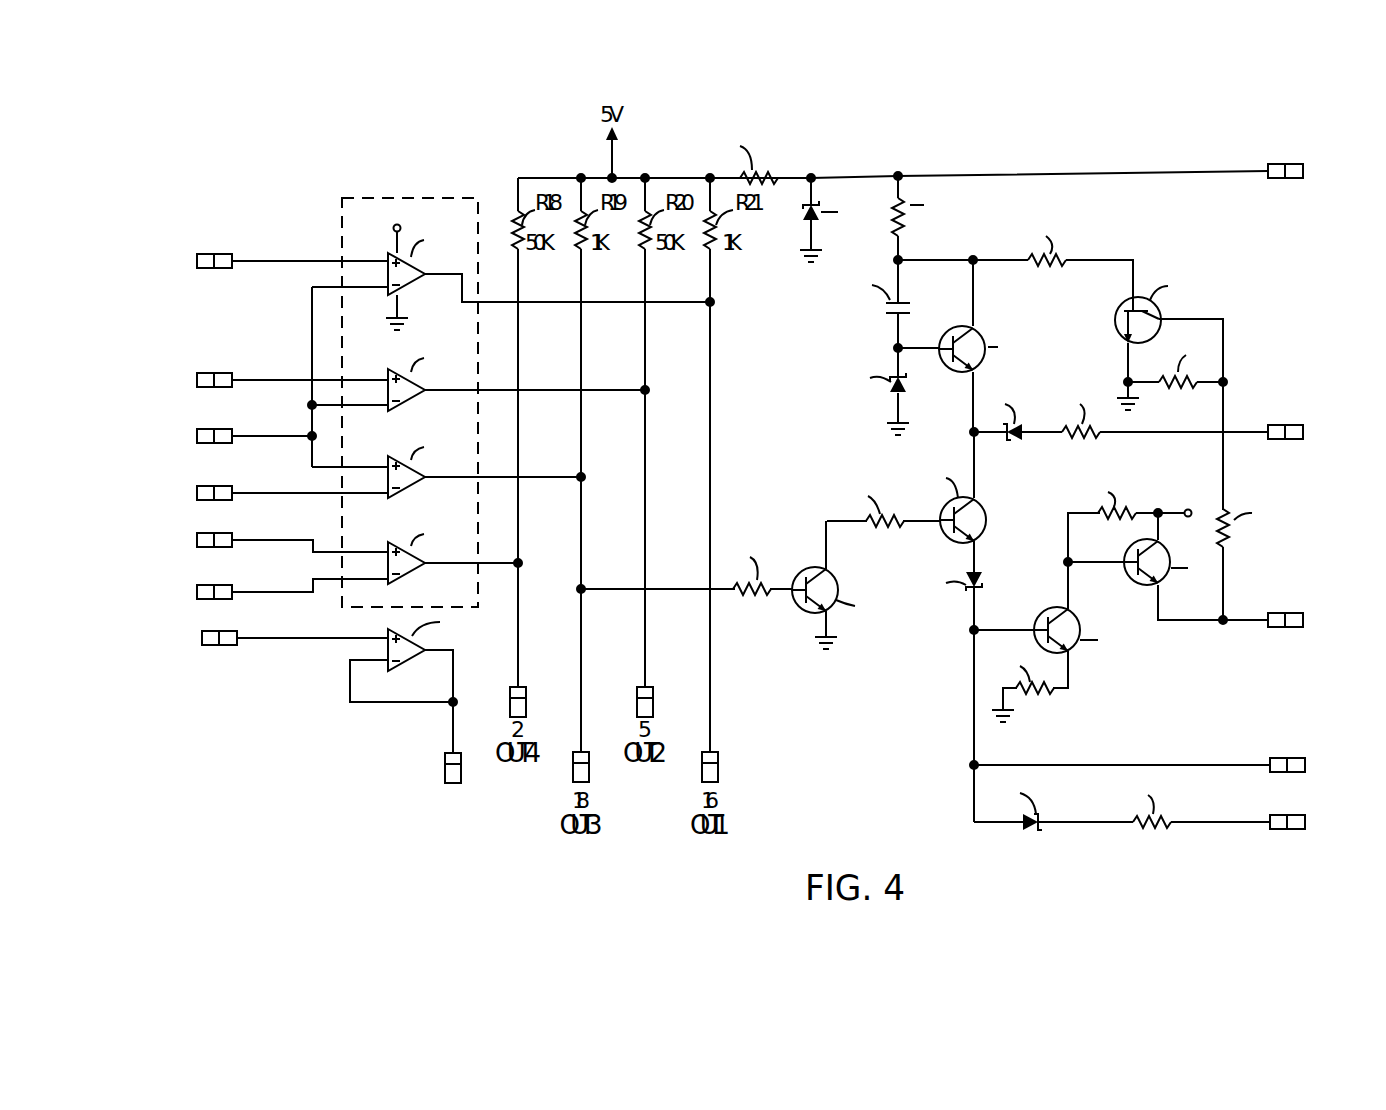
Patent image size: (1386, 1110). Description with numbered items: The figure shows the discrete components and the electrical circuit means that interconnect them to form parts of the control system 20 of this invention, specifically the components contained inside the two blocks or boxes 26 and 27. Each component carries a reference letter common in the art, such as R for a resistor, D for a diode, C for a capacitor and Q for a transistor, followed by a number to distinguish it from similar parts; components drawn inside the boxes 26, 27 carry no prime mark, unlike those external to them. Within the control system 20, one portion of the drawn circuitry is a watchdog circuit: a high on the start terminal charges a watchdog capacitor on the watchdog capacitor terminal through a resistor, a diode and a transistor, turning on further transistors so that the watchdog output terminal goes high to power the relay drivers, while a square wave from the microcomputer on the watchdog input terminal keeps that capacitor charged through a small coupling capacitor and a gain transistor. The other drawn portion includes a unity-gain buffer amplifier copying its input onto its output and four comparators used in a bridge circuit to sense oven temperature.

The control system 20 is at (903, 108).
The block or box 26 is at (314, 757).
The block or box 27 is at (1168, 122).